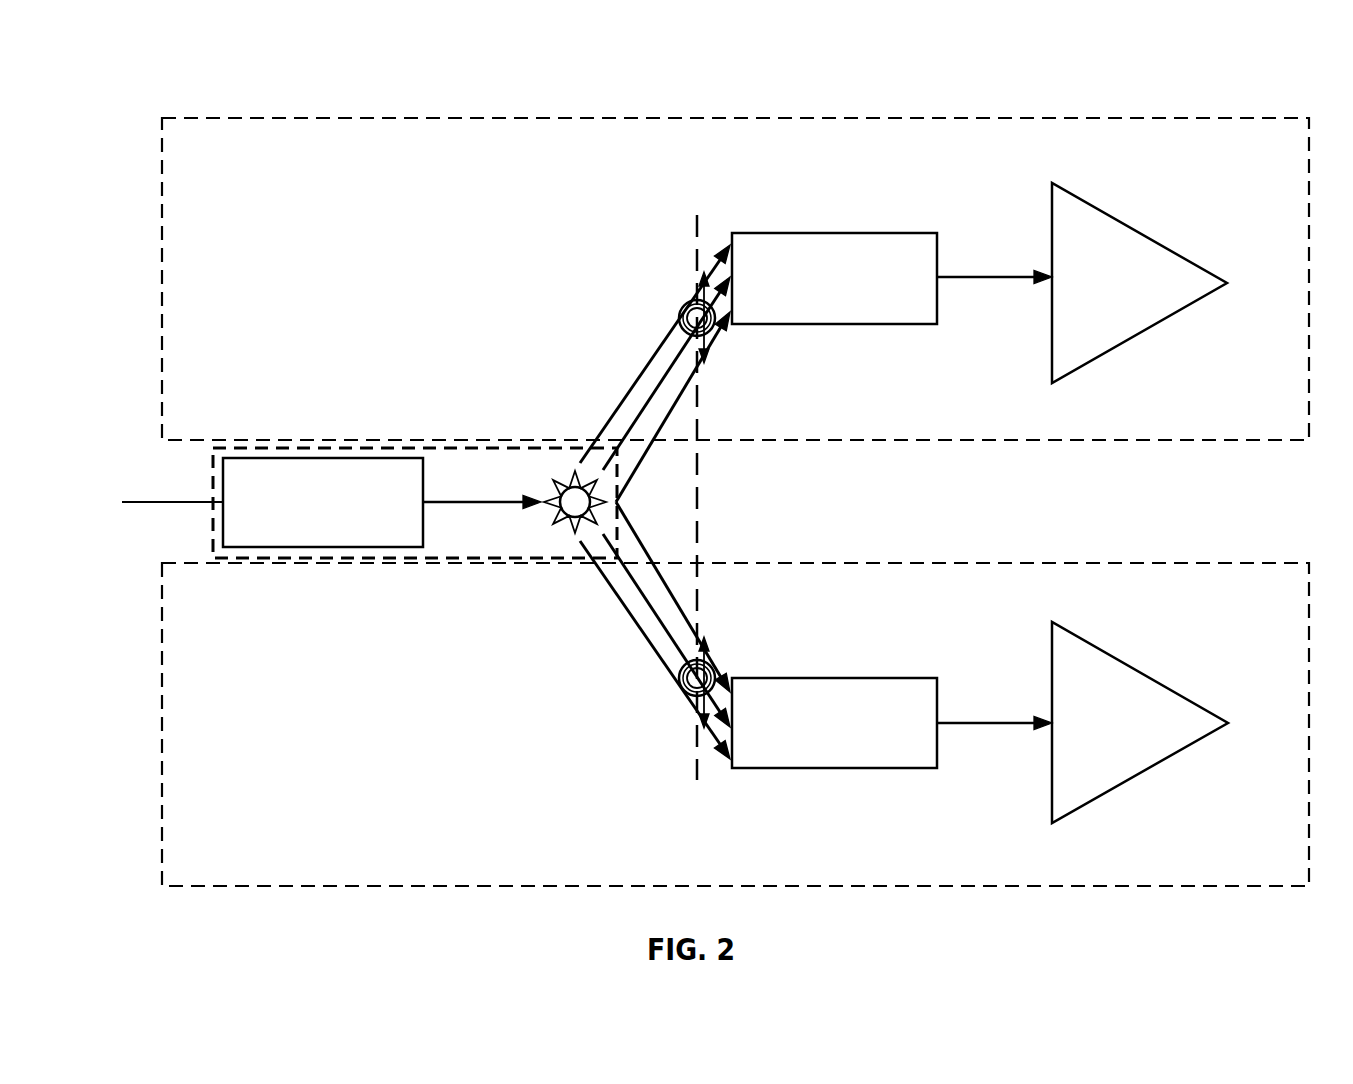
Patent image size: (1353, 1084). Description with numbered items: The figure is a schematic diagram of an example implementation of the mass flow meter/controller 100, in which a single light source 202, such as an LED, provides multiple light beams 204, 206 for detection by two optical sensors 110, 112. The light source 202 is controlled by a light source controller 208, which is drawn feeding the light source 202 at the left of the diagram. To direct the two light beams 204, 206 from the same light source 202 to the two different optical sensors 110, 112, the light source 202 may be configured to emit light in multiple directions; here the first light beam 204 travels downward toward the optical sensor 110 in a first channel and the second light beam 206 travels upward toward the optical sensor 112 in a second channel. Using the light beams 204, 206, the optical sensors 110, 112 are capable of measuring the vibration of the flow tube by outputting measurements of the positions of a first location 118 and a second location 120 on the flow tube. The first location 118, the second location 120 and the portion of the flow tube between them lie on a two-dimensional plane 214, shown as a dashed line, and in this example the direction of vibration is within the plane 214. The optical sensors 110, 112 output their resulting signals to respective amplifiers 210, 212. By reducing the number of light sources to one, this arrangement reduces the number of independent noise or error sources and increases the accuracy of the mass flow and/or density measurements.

The mass flow meter/controller 100 is at (190, 86).
The optical sensor 110 is at (805, 678).
The optical sensor 112 is at (811, 232).
The first location 118 is at (683, 694).
The second location 120 is at (680, 308).
The light source 202 is at (570, 488).
The light beam 204 is at (672, 610).
The light beam 206 is at (672, 352).
The light source controller 208 is at (347, 517).
The amplifier 210 is at (1139, 672).
The amplifier 212 is at (1141, 232).
The two-dimensional plane 214 is at (690, 232).